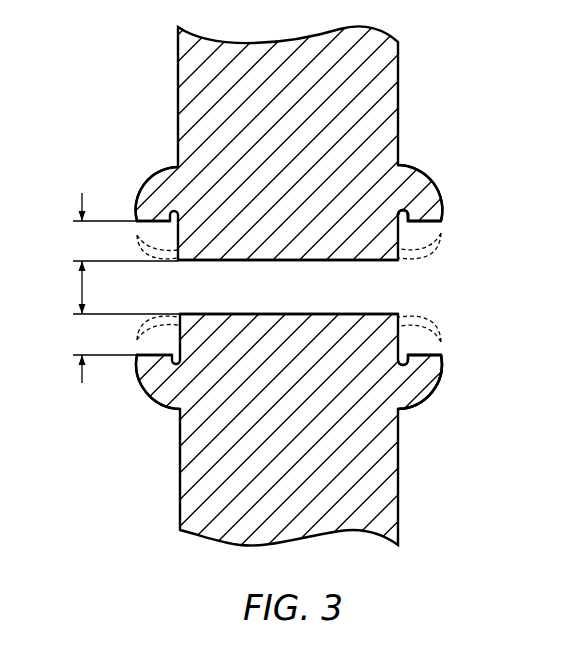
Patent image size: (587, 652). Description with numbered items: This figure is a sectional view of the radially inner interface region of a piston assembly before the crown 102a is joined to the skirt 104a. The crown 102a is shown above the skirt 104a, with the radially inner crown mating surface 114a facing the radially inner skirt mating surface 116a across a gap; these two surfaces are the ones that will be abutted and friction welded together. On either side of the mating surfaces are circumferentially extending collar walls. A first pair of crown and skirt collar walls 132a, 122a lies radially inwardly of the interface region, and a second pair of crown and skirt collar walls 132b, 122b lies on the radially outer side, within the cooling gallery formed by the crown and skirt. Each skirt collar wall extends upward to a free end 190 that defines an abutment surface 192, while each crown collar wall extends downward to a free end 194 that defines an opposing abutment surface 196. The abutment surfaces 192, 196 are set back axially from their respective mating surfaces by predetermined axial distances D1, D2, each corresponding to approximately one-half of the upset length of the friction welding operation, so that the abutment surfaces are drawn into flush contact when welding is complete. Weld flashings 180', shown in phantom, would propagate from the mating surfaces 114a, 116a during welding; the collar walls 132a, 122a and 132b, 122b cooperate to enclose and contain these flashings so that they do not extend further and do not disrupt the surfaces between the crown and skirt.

The crown 102a is at (422, 66).
The skirt 104a is at (412, 511).
The crown collar wall 132a is at (431, 183).
The crown collar wall 132b is at (153, 200).
The skirt collar wall 122a is at (417, 382).
The skirt collar wall 122b is at (156, 378).
The radially inner crown mating surface 114a is at (355, 262).
The radially inner skirt mating surface 116a is at (360, 314).
The free end 190 is at (452, 223).
The abutment surface 192 is at (438, 238).
The free end 194 is at (448, 370).
The abutment surface 196 is at (441, 356).
The weld flashings 180' is at (326, 298).
The axial distance D1 is at (124, 253).
The axial distance D2 is at (125, 343).